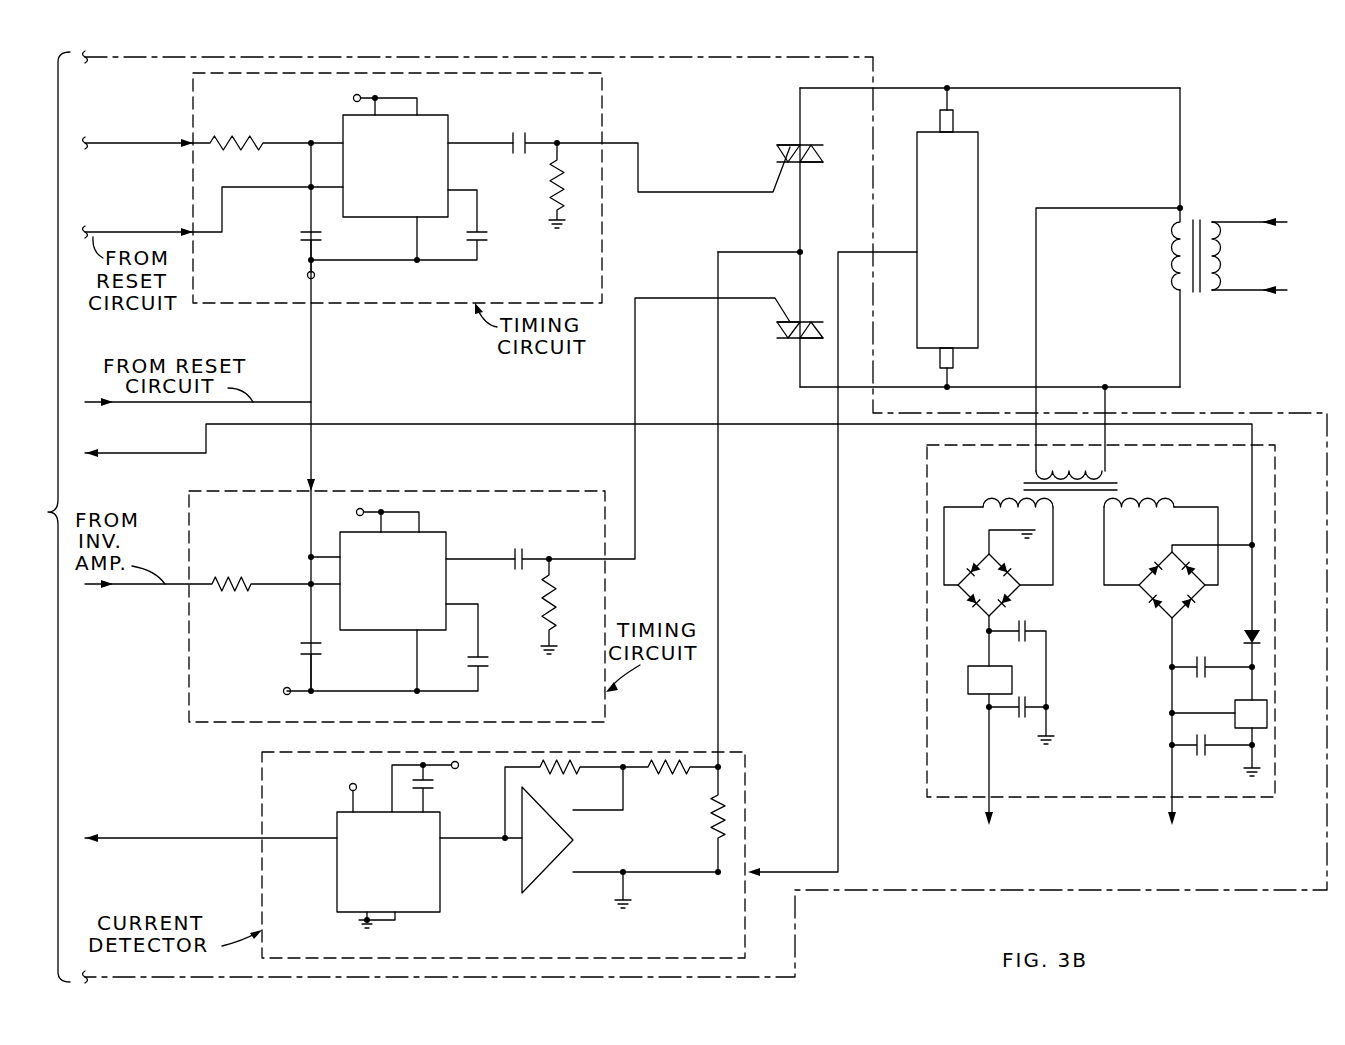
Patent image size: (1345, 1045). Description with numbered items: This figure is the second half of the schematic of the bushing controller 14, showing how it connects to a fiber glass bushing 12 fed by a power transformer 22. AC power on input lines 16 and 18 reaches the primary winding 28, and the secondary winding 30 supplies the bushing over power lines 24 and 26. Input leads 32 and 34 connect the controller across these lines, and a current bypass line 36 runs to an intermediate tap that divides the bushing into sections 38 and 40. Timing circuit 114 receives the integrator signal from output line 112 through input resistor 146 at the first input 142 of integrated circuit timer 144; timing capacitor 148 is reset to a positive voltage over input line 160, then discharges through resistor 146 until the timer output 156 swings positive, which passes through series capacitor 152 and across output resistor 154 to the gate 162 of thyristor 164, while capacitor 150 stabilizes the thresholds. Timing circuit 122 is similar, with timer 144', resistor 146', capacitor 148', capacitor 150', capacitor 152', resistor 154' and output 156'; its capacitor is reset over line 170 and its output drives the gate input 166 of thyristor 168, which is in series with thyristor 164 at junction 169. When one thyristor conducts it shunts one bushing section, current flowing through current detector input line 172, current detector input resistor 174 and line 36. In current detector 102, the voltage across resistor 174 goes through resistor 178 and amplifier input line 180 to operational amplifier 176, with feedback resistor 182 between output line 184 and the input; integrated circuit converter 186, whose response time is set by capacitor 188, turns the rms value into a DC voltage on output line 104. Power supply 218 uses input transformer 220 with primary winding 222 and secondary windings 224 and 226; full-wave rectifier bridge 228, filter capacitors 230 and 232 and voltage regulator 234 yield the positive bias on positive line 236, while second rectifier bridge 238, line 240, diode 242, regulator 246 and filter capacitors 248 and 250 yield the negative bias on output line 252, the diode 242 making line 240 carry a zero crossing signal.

The fiber glass bushing 12 is at (978, 195).
The bushing controller 14 is at (802, 953).
The input line 16 is at (1255, 222).
The input line 18 is at (1238, 290).
The power transformer 22 is at (1197, 222).
The power line 24 is at (1180, 322).
The power line 26 is at (1182, 105).
The primary winding 28 is at (1218, 256).
The secondary winding 30 is at (1176, 255).
The input lead 32 is at (928, 387).
The input lead 34 is at (888, 88).
The current bypass line 36 is at (888, 252).
The bushing section 38 is at (965, 350).
The bushing section 40 is at (963, 133).
The current detector 102 is at (258, 861).
The output line 104 is at (118, 838).
The output line 112 is at (148, 143).
The timing circuit 114 is at (188, 90).
The timing circuit 122 is at (184, 651).
The first input 142 is at (326, 143).
The integrated circuit timer 144 is at (420, 171).
The input resistor 146 is at (252, 123).
The timing capacitor 148 is at (330, 251).
The second capacitor 150 is at (477, 230).
The series capacitor 152 is at (547, 132).
The output resistor 154 is at (529, 184).
The timer output 156 is at (480, 161).
The input line 160 is at (150, 232).
The gate 162 is at (723, 192).
The thyristor 164 is at (790, 143).
The gate input 166 is at (637, 500).
The thyristor 168 is at (790, 340).
The junction 169 is at (799, 250).
The line 170 is at (314, 470).
The current detector input line 172 is at (720, 570).
The current detector input resistor 174 is at (725, 806).
The operational amplifier 176 is at (555, 873).
The resistor 178 is at (678, 770).
The amplifier input line 180 is at (590, 812).
The feedback resistor 182 is at (565, 768).
The output line 184 is at (452, 842).
The integrated circuit converter 186 is at (425, 912).
The capacitor 188 is at (433, 786).
The power supply 218 is at (918, 782).
The input transformer 220 is at (1117, 486).
The primary winding 222 is at (1040, 474).
The secondary winding 224 is at (998, 505).
The secondary winding 226 is at (1140, 505).
The full-wave rectifier bridge 228 is at (983, 618).
The filter capacitor 230 is at (1024, 628).
The filter capacitor 232 is at (1025, 707).
The voltage regulator 234 is at (968, 680).
The positive line 236 is at (989, 760).
The second rectifier bridge 238 is at (1168, 620).
The line 240 is at (800, 424).
The diode 242 is at (1260, 640).
The regulator 246 is at (1235, 705).
The filter capacitor 248 is at (1190, 672).
The filter capacitor 250 is at (1192, 745).
The output line 252 is at (1172, 783).
The integrated circuit timer 144' is at (423, 595).
The resistor 146' is at (212, 568).
The capacitor 148' is at (331, 663).
The capacitor 150' is at (479, 651).
The capacitor 152' is at (550, 547).
The resistor 154' is at (518, 605).
The output 156' is at (480, 576).